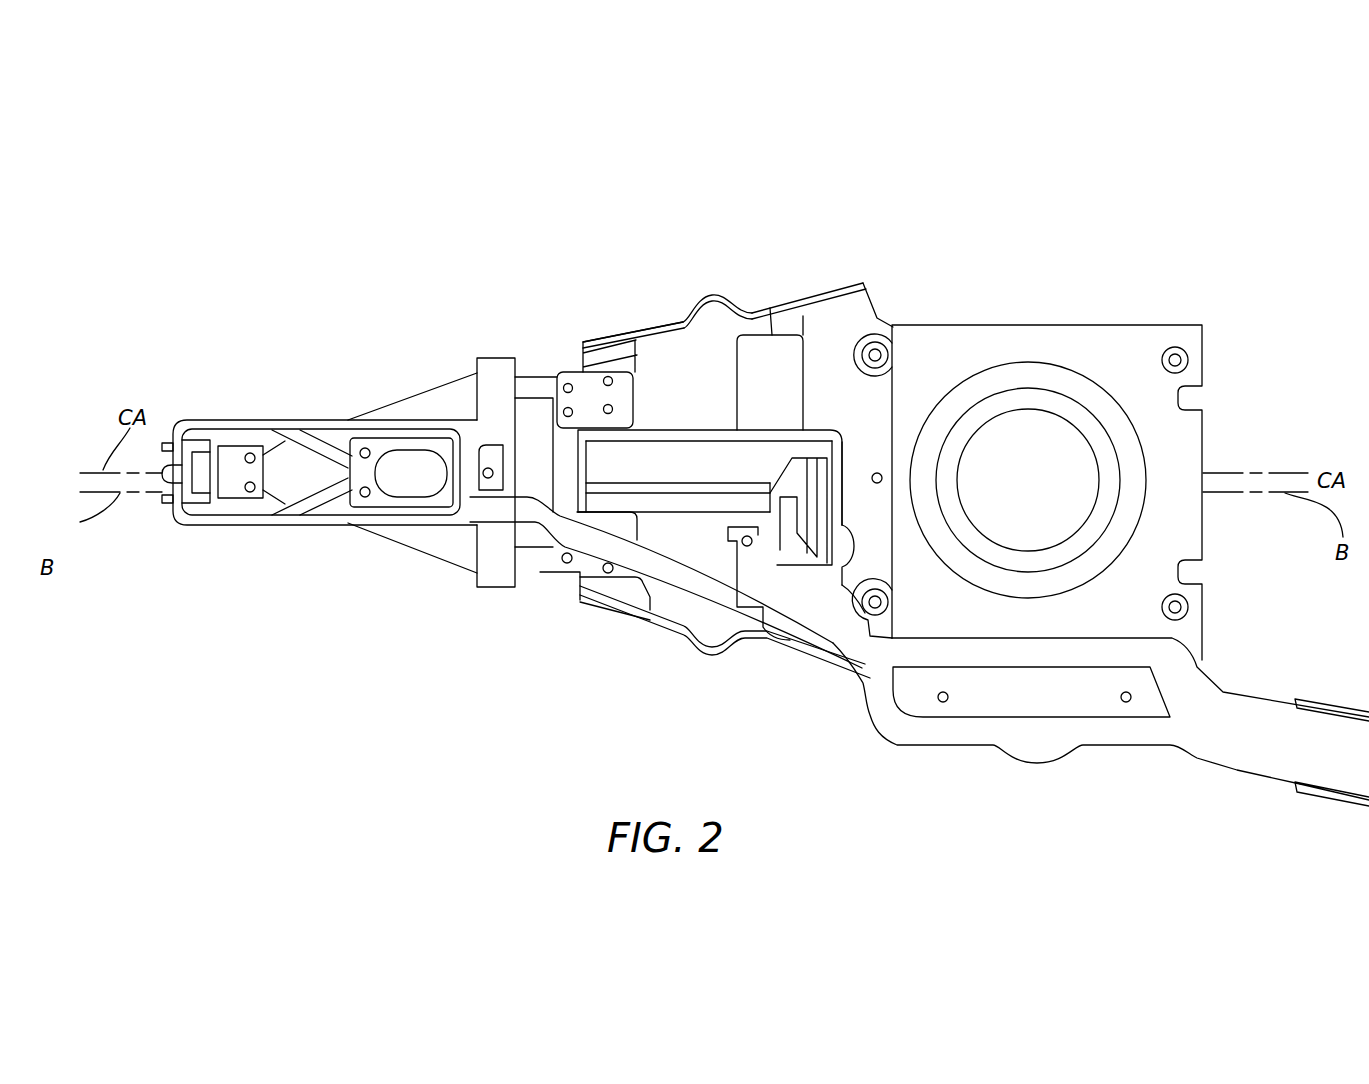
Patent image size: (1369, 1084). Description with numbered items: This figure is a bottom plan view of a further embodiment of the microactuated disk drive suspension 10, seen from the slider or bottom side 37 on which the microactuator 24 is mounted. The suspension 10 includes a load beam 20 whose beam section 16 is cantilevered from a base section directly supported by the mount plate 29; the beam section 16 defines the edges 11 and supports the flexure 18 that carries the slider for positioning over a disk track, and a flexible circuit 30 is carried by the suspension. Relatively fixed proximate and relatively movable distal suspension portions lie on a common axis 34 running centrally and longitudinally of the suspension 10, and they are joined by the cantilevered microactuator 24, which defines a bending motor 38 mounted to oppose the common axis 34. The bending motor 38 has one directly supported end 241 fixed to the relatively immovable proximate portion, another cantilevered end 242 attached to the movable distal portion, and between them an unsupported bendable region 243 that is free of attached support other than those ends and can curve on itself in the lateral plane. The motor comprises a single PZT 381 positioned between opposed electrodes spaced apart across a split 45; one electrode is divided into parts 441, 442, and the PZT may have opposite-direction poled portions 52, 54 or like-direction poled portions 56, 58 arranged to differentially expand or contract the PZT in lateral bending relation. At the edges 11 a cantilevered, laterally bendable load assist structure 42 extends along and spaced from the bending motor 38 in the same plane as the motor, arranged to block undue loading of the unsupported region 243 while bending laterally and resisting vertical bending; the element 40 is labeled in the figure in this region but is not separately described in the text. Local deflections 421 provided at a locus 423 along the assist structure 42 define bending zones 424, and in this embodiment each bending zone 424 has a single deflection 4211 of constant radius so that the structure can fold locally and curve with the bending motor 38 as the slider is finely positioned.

The microactuated suspension 10 is at (1075, 255).
The edges 11 is at (723, 290).
The beam section 16 is at (753, 453).
The flexure 18 is at (243, 418).
The load beam 20 is at (1012, 320).
The microactuator 24 is at (673, 440).
The mount plate 29 is at (1117, 340).
The flexible circuit 30 is at (677, 560).
The common axis 34 is at (593, 330).
The bottom side 37 is at (813, 323).
The bending motor 38 is at (653, 527).
The band 40 is at (650, 370).
The load assist structure 42 is at (778, 275).
The split 45 is at (618, 487).
The opposite-direction poled portion 52 is at (859, 426).
The like-direction poled portion 56 is at (800, 458).
The opposite-direction poled portion 54 is at (674, 639).
The like-direction poled portion 58 is at (693, 503).
The directly supported end 241 is at (593, 453).
The cantilevered end 242 is at (823, 447).
The unsupported bendable region 243 is at (723, 457).
The PZT 381 is at (600, 515).
The local deflections 421 is at (683, 293).
The locus 423 is at (732, 349).
The bending zones 424 is at (670, 648).
The electrode part 441 is at (775, 450).
The electrode part 442 is at (740, 503).
The single deflection of constant radius 4211 is at (738, 302).